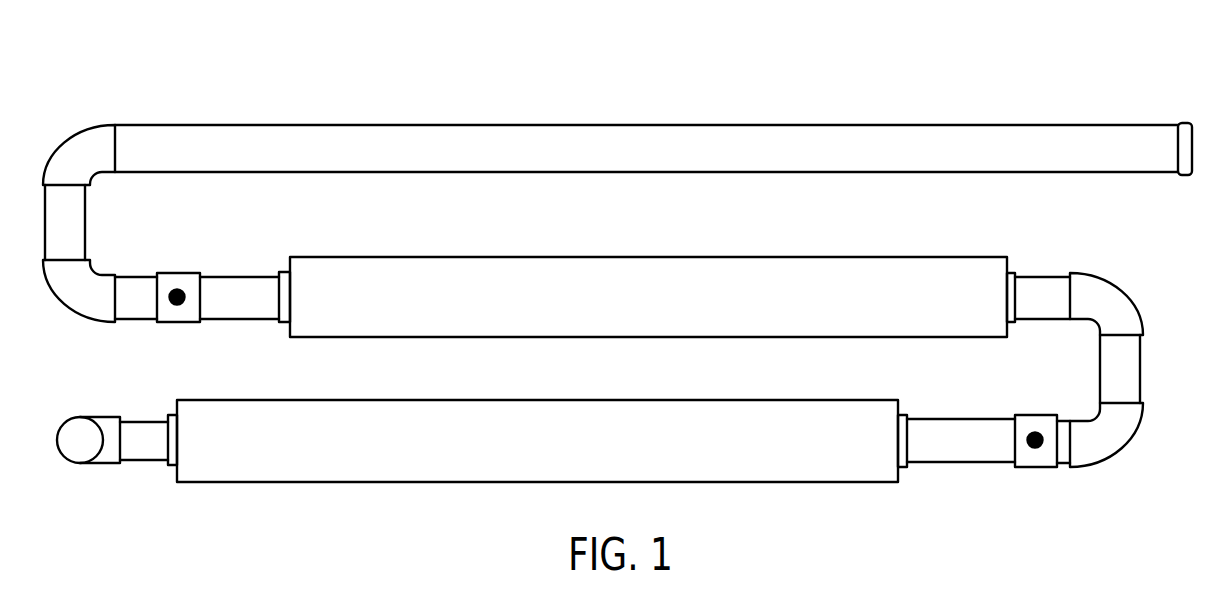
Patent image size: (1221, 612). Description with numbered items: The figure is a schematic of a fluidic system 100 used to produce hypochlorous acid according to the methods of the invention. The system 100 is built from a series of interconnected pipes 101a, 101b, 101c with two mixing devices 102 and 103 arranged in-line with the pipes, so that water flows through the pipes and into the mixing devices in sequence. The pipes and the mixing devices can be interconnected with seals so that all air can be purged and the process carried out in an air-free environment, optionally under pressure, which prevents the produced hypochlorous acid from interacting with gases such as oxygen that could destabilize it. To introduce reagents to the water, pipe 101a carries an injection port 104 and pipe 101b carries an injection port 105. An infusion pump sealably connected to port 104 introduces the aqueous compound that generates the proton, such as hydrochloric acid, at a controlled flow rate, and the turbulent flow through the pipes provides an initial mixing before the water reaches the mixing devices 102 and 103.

The fluidic system 100 is at (44, 98).
The pipe 101a is at (422, 125).
The pipe 101b is at (1125, 292).
The pipe 101c is at (107, 465).
The mixing device 102 is at (478, 257).
The mixing device 103 is at (482, 483).
The injection port 104 is at (180, 272).
The injection port 105 is at (1035, 468).